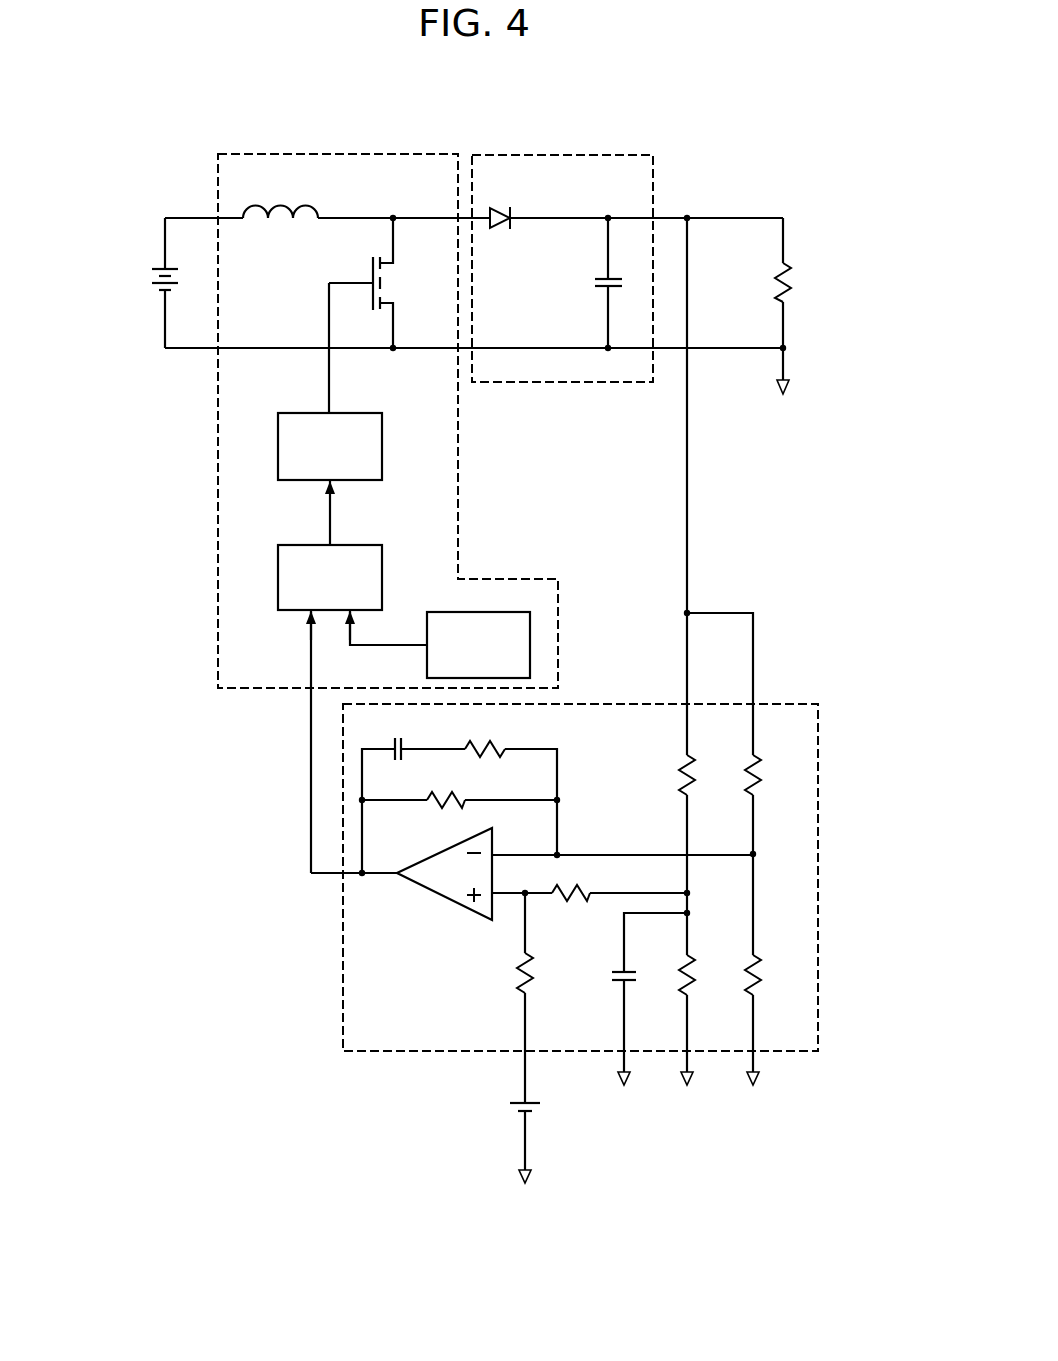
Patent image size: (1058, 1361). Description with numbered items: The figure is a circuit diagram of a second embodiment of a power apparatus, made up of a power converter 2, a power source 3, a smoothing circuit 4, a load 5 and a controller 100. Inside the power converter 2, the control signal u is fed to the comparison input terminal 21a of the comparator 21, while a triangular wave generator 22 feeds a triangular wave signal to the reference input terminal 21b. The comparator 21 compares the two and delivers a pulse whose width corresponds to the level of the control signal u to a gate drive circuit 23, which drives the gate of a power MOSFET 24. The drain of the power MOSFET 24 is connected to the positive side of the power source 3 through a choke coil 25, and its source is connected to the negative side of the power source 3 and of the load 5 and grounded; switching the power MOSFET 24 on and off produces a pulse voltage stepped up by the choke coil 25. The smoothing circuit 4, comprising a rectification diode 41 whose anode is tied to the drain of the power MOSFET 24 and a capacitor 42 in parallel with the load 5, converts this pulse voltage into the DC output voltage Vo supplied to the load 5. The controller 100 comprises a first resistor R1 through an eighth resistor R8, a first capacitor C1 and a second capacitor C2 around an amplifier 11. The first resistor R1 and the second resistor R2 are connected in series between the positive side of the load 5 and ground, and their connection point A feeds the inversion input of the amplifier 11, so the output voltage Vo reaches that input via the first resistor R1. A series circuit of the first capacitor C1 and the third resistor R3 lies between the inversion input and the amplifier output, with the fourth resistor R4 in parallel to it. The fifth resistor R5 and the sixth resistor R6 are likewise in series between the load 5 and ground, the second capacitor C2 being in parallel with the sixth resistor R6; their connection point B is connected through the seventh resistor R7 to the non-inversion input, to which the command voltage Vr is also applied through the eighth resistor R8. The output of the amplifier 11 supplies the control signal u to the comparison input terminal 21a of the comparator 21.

The power converter 2 is at (333, 154).
The smoothing circuit 4 is at (615, 155).
The power source 3 is at (151, 279).
The choke coil 25 is at (308, 204).
The power MOSFET 24 is at (398, 289).
The rectification diode 41 is at (521, 209).
The capacitor 42 is at (594, 283).
The load 5 is at (796, 291).
The gate drive circuit 23 is at (348, 466).
The comparator 21 is at (348, 600).
The triangular wave generator 22 is at (496, 665).
The comparison input terminal 21a is at (305, 612).
The reference input terminal 21b is at (352, 618).
The controller 100 is at (811, 704).
The amplifier 11 is at (443, 882).
The first capacitor C1 is at (402, 733).
The second capacitor C2 is at (610, 973).
The first resistor R1 is at (762, 776).
The second resistor R2 is at (762, 985).
The third resistor R3 is at (507, 745).
The fourth resistor R4 is at (446, 806).
The fifth resistor R5 is at (666, 775).
The sixth resistor R6 is at (676, 977).
The seventh resistor R7 is at (553, 905).
The eighth resistor R8 is at (516, 972).
The output voltage Vo is at (801, 205).
The command voltage Vr is at (542, 1110).
The control signal u is at (329, 857).
The connection point A is at (777, 857).
The connection point B is at (707, 895).